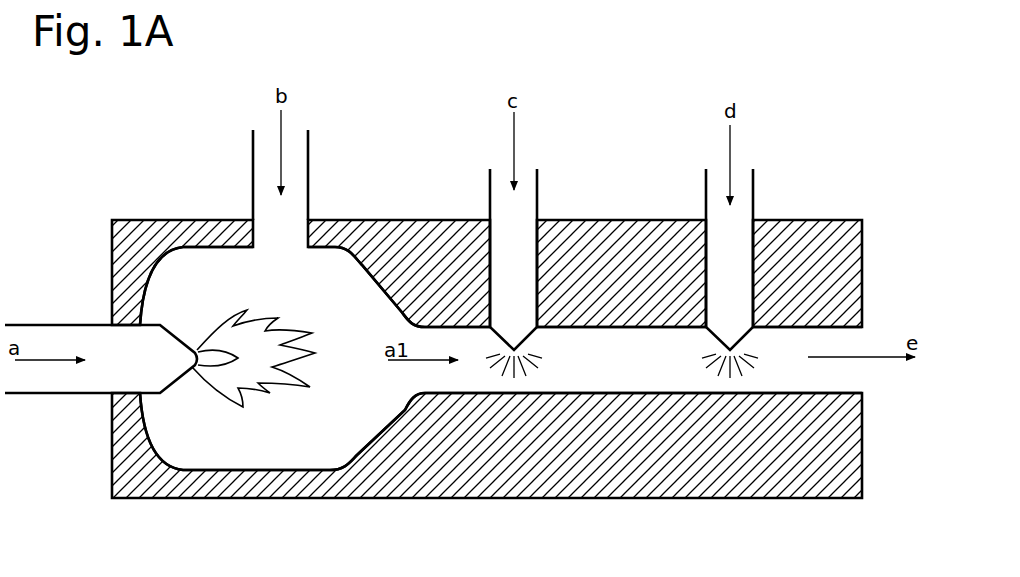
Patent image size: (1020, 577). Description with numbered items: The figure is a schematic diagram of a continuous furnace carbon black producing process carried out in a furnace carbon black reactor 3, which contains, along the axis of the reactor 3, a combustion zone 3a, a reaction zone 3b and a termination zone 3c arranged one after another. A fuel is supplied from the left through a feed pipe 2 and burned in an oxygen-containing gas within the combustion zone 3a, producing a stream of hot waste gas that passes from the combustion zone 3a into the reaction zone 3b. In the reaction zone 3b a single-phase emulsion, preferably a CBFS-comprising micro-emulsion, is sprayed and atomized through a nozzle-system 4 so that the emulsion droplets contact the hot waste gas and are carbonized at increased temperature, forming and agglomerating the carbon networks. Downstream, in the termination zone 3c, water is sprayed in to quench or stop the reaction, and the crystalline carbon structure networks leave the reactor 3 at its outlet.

The fuel supply pipe 2 is at (52, 394).
The furnace carbon black reactor 3 is at (190, 205).
The combustion zone 3a is at (290, 425).
The reaction zone 3b is at (607, 370).
The termination zone 3c is at (820, 370).
The nozzle-system 4 is at (537, 200).